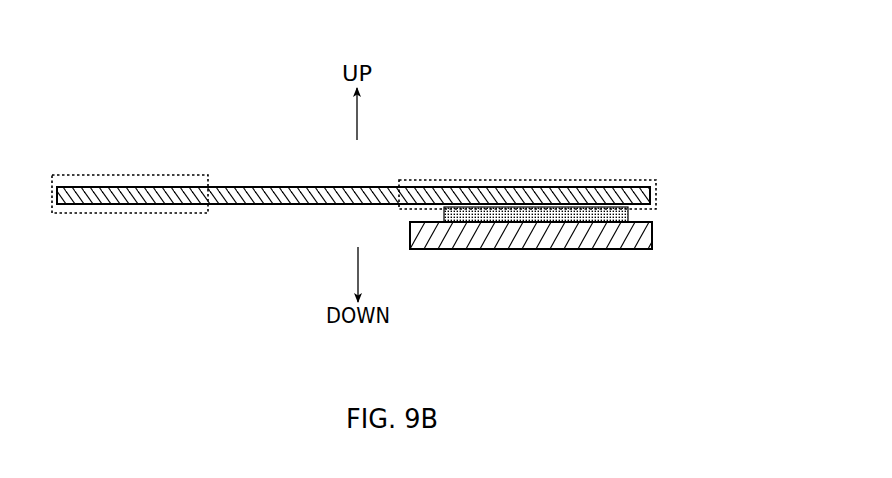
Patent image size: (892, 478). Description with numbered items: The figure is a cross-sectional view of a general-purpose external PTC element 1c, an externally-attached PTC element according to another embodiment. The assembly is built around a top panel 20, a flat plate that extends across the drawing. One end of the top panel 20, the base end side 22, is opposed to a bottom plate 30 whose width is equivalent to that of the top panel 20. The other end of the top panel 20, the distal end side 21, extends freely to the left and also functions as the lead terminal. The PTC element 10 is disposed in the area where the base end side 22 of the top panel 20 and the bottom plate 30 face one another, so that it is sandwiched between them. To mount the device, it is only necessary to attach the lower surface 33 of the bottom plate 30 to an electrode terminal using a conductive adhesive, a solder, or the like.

The external PTC element 1c is at (487, 132).
The PTC element 10 is at (628, 213).
The top panel 20 is at (292, 187).
The distal end side 21 is at (83, 175).
The base end side 22 is at (635, 180).
The bottom plate 30 is at (555, 238).
The lower surface 33 is at (470, 252).